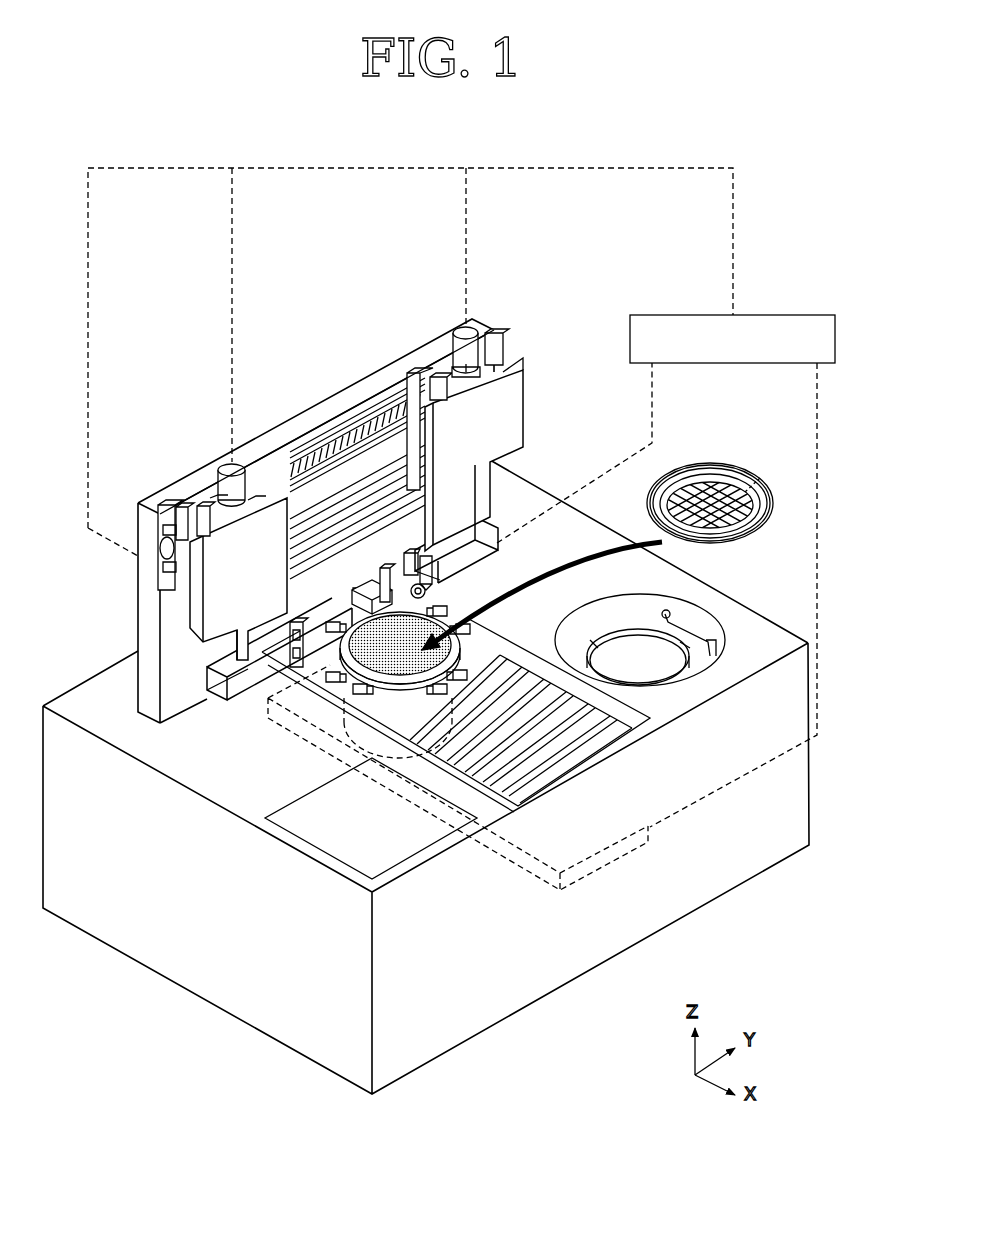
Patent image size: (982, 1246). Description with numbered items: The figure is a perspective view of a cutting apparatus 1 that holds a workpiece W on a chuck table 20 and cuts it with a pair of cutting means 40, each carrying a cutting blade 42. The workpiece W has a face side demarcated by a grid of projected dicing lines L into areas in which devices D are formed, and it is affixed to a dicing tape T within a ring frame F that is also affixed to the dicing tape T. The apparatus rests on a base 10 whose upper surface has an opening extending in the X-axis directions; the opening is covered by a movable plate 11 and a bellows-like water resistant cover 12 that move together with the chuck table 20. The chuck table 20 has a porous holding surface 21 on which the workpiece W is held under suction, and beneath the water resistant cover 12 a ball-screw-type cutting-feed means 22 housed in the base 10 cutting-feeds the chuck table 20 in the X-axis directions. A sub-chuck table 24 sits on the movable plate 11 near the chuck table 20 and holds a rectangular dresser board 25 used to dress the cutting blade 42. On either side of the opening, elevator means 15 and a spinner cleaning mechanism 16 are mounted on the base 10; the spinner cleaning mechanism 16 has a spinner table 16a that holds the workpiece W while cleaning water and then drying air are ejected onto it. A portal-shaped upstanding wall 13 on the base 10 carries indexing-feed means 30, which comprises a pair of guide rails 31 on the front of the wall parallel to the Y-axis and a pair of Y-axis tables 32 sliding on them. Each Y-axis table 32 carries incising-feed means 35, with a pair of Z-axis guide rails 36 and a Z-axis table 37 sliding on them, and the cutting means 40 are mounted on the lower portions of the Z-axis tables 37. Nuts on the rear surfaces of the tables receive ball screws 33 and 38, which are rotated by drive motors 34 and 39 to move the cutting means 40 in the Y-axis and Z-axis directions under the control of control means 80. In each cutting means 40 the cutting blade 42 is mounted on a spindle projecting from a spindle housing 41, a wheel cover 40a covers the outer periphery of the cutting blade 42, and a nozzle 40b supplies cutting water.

The cutting apparatus 1 is at (78, 272).
The base 10 is at (768, 622).
The movable plate 11 is at (490, 648).
The water resistant cover 12 is at (598, 748).
The upstanding wall 13 is at (138, 620).
The elevator means 15 is at (352, 855).
The spinner cleaning mechanism 16 is at (707, 682).
The spinner table 16a is at (640, 676).
The chuck table 20 is at (347, 630).
The holding surface 21 is at (406, 664).
The cutting-feed means 22 is at (532, 873).
The sub-chuck table 24 is at (388, 580).
The dresser board 25 is at (370, 582).
The indexing-feed means 30 is at (150, 578).
The guide rails 31 is at (330, 432).
The Y-axis tables 32 is at (165, 508).
The ball screws 33 is at (385, 432).
The drive motors 34 is at (160, 548).
The incising-feed means 35 is at (172, 440).
The guide rails 36 is at (182, 508).
The Z-axis table 37 is at (222, 606).
The ball screws 38 is at (208, 500).
The drive motors 39 is at (231, 466).
The cutting means 40 is at (222, 703).
The wheel cover 40a is at (418, 560).
The nozzle 40b is at (438, 568).
The spindle housing 41 is at (235, 690).
The cutting blade 42 is at (426, 593).
The control means 80 is at (770, 316).
The workpiece W is at (745, 442).
The ring frame F is at (718, 464).
The dicing tape T is at (760, 512).
The devices D is at (690, 492).
The projected dicing lines L is at (748, 490).